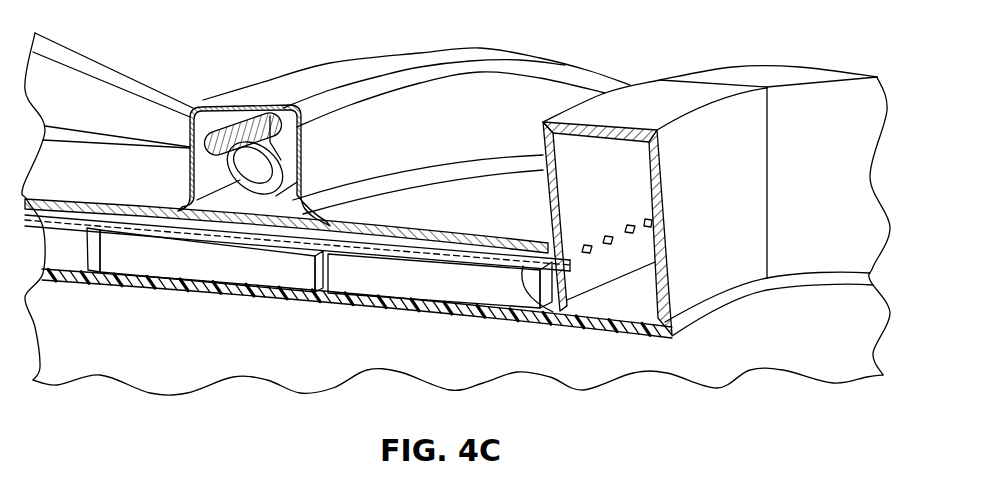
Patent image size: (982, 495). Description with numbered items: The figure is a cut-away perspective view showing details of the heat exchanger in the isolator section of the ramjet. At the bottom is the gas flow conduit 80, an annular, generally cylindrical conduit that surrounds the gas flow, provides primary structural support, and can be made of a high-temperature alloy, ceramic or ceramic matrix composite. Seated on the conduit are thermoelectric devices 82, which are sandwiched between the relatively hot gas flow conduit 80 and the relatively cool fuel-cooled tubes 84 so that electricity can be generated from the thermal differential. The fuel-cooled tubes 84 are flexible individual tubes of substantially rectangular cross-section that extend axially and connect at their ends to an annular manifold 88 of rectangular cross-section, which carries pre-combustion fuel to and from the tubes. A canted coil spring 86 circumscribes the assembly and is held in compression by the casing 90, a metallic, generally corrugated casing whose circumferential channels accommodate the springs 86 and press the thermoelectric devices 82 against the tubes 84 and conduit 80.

The gas flow conduit 80 is at (707, 352).
The thermoelectric device 82 is at (190, 271).
The fuel-cooled tube 84 is at (630, 234).
The spring 86 is at (248, 102).
The manifold 88 is at (597, 148).
The casing 90 is at (313, 83).